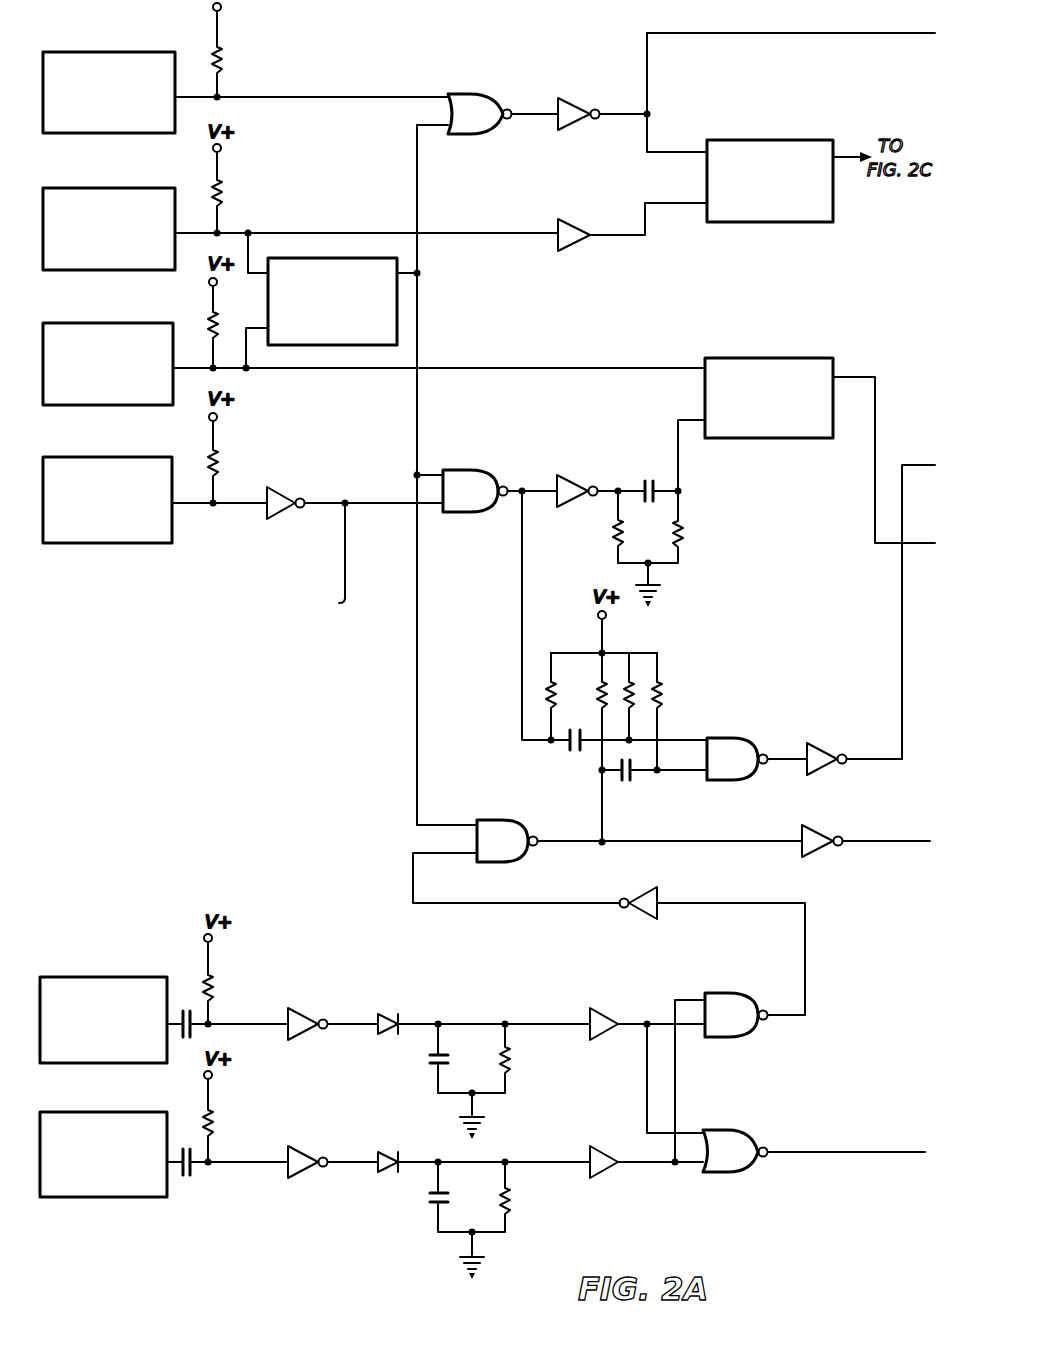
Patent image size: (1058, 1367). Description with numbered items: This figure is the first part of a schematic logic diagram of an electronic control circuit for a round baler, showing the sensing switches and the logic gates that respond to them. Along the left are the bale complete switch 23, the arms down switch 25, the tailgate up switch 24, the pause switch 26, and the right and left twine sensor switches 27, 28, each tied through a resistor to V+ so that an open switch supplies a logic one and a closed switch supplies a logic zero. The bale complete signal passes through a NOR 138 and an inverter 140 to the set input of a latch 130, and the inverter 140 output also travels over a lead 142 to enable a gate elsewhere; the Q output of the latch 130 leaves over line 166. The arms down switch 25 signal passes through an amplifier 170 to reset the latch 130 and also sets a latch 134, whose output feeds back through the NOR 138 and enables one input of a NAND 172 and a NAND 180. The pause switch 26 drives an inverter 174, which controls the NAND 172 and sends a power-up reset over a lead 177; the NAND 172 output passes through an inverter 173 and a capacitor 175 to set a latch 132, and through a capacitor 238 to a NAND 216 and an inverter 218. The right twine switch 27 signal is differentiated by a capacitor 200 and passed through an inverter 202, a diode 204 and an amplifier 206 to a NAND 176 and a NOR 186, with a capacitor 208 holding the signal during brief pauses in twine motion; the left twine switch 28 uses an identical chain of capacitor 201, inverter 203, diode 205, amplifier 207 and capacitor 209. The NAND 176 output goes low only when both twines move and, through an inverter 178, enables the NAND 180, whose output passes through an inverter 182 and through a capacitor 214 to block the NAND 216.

The bale complete switch 23 is at (145, 58).
The arms down switch 25 is at (160, 178).
The tailgate up switch 24 is at (140, 322).
The pause switch 26 is at (135, 458).
The right twine sensor switch 27 is at (118, 982).
The left twine sensor switch 28 is at (120, 1112).
The latch 130 is at (750, 222).
The latch 132 is at (787, 356).
The latch 134 is at (400, 304).
The NOR 138 is at (470, 130).
The inverter 140 is at (578, 124).
The lead 142 is at (713, 38).
The output line to FIG. 2C 166 is at (844, 149).
The amplifier 170 is at (576, 243).
The NAND 172 is at (474, 468).
The inverter 173 is at (564, 478).
The inverter 174 is at (284, 484).
The capacitor 175 is at (642, 480).
The NAND 176 is at (720, 991).
The lead 177 is at (347, 542).
The inverter 178 is at (646, 894).
The NAND 180 is at (490, 822).
The inverter 182 is at (828, 840).
The NOR 186 is at (736, 1127).
The capacitor 200 is at (180, 1010).
The capacitor 201 is at (180, 1145).
The inverter 202 is at (304, 1012).
The inverter 203 is at (304, 1145).
The diode 204 is at (388, 1012).
The diode 205 is at (386, 1150).
The amplifier 206 is at (590, 1020).
The buffer 207 is at (604, 1154).
The capacitor 208 is at (429, 1063).
The capacitor 209 is at (429, 1210).
The capacitor 214 is at (634, 775).
The NAND 216 is at (732, 738).
The inverter 218 is at (822, 750).
The capacitor 238 is at (570, 748).